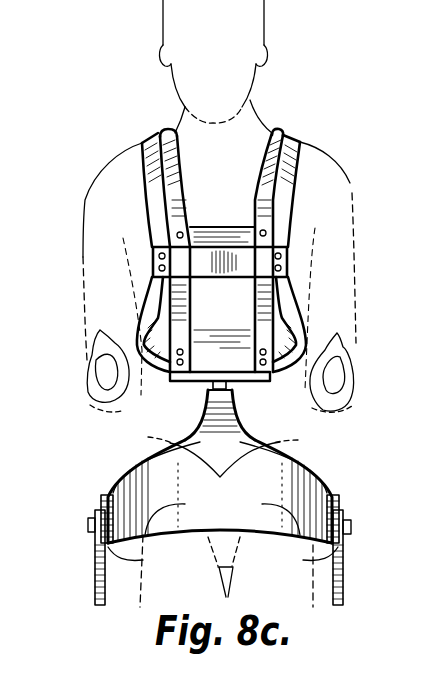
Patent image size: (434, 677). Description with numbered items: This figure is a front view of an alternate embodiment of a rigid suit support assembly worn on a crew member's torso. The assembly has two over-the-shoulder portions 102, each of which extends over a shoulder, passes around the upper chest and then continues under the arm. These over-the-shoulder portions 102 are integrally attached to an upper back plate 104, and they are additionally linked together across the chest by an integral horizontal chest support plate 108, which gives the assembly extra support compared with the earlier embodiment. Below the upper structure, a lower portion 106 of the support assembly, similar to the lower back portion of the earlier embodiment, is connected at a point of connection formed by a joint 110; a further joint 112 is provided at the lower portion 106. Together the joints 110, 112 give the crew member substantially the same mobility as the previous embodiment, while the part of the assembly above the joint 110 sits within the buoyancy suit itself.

The over-the-shoulder portions 102 is at (158, 136).
The upper back plate 104 is at (155, 425).
The lower portion 106 is at (305, 452).
The horizontal chest support plate 108 is at (153, 256).
The joint 110 is at (227, 383).
The joint 112 is at (347, 527).